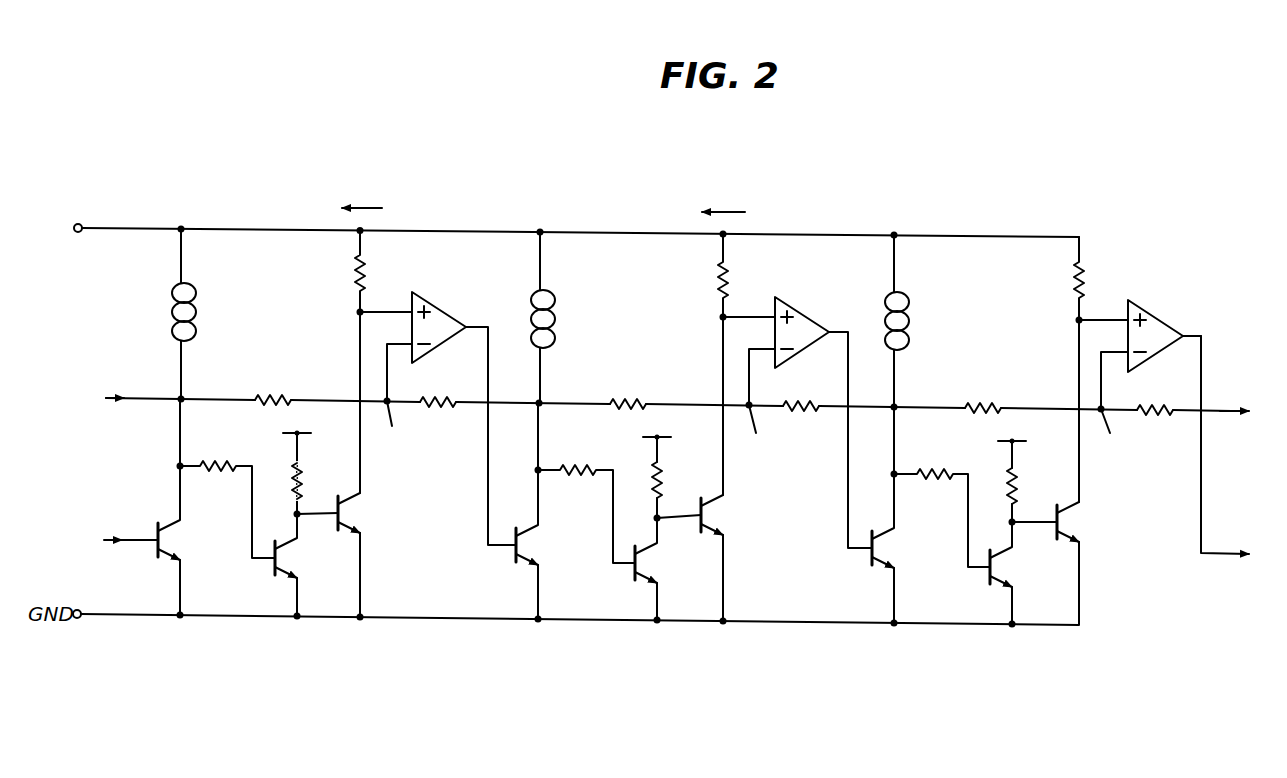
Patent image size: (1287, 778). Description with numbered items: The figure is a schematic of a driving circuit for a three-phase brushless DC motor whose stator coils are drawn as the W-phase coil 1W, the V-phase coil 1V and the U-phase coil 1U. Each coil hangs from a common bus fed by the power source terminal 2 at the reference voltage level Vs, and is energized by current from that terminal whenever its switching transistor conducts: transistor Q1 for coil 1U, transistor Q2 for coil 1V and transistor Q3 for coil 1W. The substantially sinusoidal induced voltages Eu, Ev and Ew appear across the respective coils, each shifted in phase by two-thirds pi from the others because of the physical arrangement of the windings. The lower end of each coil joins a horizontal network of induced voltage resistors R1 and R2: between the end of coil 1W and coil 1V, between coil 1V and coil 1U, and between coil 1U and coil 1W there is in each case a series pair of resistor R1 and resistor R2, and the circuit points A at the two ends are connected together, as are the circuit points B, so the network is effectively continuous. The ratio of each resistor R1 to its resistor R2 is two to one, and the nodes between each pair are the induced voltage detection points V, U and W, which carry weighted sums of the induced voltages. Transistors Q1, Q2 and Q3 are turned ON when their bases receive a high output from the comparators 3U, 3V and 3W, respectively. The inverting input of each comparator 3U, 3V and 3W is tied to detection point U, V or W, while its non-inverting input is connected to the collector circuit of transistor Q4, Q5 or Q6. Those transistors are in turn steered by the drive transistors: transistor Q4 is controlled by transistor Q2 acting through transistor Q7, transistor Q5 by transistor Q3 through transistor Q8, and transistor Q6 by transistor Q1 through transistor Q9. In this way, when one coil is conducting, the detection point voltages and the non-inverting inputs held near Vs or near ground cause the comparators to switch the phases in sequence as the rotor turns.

The power source terminal 2 is at (81, 224).
The W-phase coil 1W is at (196, 318).
The V-phase coil 1V is at (555, 313).
The U-phase coil 1U is at (910, 318).
The comparator 3V is at (446, 312).
The comparator 3U is at (808, 317).
The comparator 3W is at (1157, 313).
The induced voltage resistor R1 is at (285, 397).
The induced voltage resistor R2 is at (449, 396).
The transistor Q1 is at (874, 570).
The transistor Q2 is at (517, 565).
The transistor Q3 is at (158, 562).
The transistor Q4 is at (705, 538).
The transistor Q5 is at (341, 535).
The transistor Q6 is at (1064, 547).
The transistor Q7 is at (645, 585).
The transistor Q8 is at (270, 580).
The transistor Q9 is at (993, 589).
The induced voltage Ew is at (182, 397).
The induced voltage Ev is at (541, 401).
The induced voltage Eu is at (896, 405).
The circuit point A is at (677, 405).
The circuit point B is at (676, 452).
The induced voltage detection point V is at (398, 426).
The induced voltage detection point U is at (762, 432).
The induced voltage detection point W is at (1115, 434).